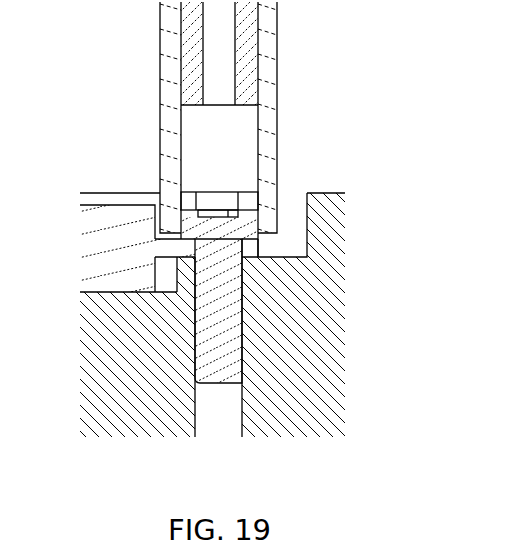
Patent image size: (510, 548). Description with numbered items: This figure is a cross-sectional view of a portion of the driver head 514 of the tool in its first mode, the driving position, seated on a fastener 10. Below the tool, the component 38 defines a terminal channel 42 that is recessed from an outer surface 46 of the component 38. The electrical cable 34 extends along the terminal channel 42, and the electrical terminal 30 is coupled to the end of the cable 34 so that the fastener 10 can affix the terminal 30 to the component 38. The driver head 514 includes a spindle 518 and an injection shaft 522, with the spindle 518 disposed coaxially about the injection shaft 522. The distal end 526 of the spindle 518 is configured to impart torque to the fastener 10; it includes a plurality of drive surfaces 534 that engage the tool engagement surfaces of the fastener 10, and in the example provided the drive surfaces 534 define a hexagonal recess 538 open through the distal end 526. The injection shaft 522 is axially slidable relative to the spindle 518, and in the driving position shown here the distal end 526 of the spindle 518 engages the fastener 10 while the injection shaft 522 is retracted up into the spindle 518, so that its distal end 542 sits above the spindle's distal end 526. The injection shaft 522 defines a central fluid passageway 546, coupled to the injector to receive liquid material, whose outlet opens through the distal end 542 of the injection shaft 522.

The fastener 10 is at (208, 352).
The electrical terminal 30 is at (162, 253).
The electrical cable 34 is at (120, 282).
The component 38 is at (258, 312).
The terminal channel 42 is at (287, 243).
The outer surface 46 is at (327, 193).
The driver head 514 is at (201, 129).
The spindle 518 is at (175, 35).
The injection shaft 522 is at (247, 88).
The distal end of the spindle 526 is at (272, 243).
The drive surfaces 534 is at (185, 200).
The hexagonal recess 538 is at (247, 171).
The distal end of the injection shaft 542 is at (243, 105).
The central fluid passageway 546 is at (223, 52).